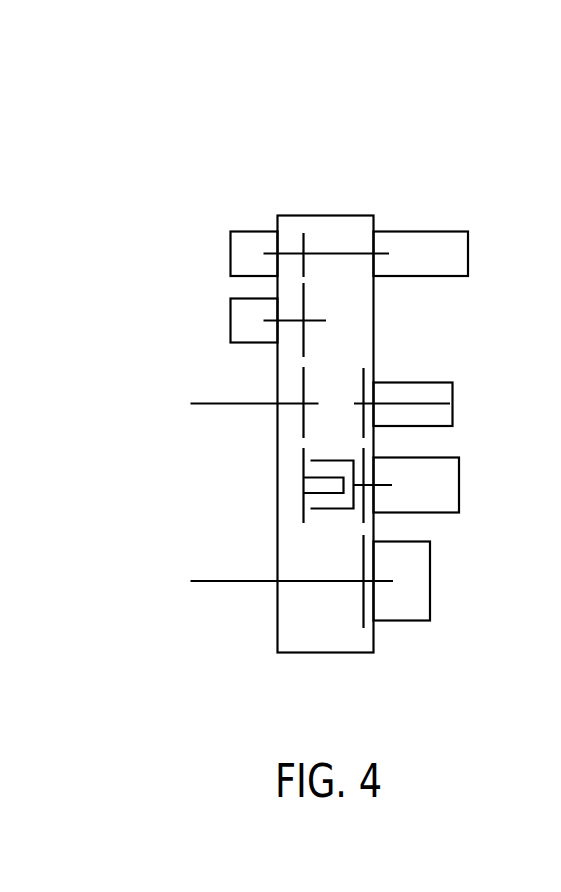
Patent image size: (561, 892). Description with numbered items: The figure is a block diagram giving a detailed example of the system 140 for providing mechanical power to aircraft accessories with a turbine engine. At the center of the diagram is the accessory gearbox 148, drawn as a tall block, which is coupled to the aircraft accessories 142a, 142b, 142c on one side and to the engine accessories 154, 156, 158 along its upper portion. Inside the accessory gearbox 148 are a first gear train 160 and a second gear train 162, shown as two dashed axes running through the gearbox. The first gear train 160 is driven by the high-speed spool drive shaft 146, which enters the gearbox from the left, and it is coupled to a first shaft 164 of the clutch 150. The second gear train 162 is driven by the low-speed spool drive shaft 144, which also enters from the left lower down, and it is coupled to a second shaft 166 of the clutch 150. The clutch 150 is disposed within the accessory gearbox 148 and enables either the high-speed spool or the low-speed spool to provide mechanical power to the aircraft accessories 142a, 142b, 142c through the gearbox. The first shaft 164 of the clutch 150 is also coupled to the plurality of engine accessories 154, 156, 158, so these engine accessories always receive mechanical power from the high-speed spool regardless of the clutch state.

The system 140 is at (244, 159).
The accessory gearbox 148 is at (330, 656).
The first gear train 160 is at (314, 224).
The second gear train 162 is at (362, 355).
The engine accessory 158 is at (230, 254).
The engine accessory 154 is at (468, 253).
The engine accessory 156 is at (230, 320).
The aircraft accessory 142c is at (452, 403).
The high-speed spool drive shaft 146 is at (206, 404).
The aircraft accessory 142b is at (459, 485).
The first shaft 164 is at (304, 477).
The clutch 150 is at (291, 487).
The second shaft 166 is at (354, 494).
The aircraft accessory 142a is at (430, 582).
The low-speed spool drive shaft 144 is at (205, 582).